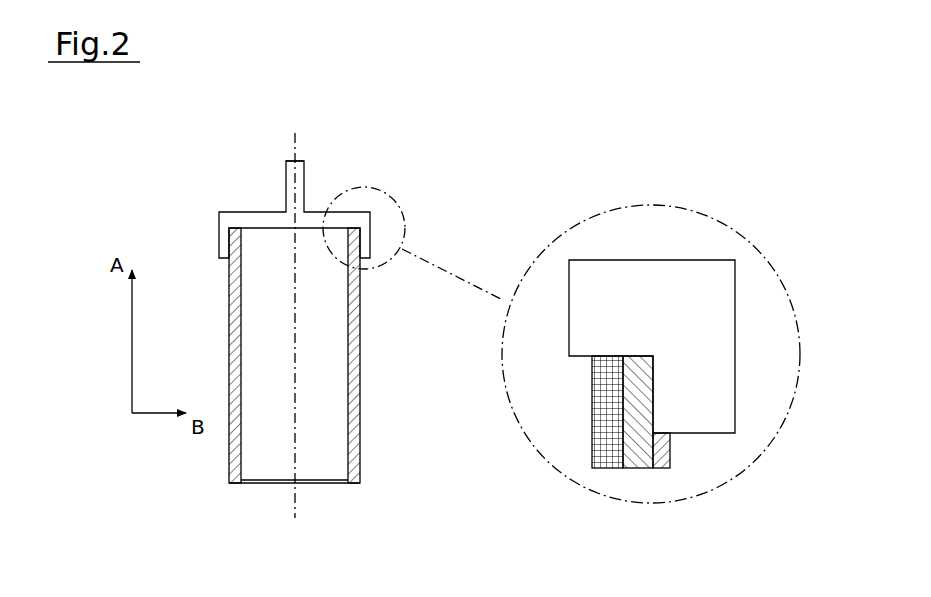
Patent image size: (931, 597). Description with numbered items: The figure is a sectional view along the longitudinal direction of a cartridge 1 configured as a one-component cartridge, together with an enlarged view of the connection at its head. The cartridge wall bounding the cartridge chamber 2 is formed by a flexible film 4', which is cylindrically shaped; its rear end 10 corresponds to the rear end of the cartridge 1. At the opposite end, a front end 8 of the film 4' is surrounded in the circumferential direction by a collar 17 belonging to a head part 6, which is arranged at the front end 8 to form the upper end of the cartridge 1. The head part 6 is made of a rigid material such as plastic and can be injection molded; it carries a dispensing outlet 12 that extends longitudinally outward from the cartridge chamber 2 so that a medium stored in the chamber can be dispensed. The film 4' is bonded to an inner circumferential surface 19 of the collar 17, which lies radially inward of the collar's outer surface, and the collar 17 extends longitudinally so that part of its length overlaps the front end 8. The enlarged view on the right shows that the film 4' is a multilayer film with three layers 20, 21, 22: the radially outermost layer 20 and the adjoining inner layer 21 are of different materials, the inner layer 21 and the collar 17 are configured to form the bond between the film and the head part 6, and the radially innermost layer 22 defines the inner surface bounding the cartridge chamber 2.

The cartridge 1 is at (216, 188).
The cartridge chamber 2 is at (258, 398).
The flexible film 4' is at (292, 355).
The head part 6 is at (350, 262).
The front end 8 is at (222, 249).
The rear end 10 is at (281, 492).
The dispensing outlet 12 is at (292, 168).
The collar 17 is at (365, 231).
The inner circumferential surface 19 is at (593, 398).
The radially outermost layer 20 is at (662, 468).
The inner layer 21 is at (636, 450).
The radially innermost layer 22 is at (598, 468).